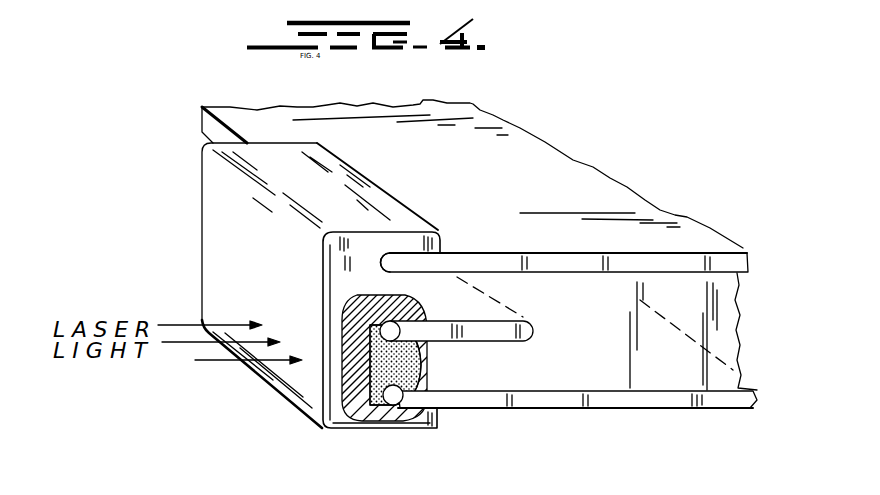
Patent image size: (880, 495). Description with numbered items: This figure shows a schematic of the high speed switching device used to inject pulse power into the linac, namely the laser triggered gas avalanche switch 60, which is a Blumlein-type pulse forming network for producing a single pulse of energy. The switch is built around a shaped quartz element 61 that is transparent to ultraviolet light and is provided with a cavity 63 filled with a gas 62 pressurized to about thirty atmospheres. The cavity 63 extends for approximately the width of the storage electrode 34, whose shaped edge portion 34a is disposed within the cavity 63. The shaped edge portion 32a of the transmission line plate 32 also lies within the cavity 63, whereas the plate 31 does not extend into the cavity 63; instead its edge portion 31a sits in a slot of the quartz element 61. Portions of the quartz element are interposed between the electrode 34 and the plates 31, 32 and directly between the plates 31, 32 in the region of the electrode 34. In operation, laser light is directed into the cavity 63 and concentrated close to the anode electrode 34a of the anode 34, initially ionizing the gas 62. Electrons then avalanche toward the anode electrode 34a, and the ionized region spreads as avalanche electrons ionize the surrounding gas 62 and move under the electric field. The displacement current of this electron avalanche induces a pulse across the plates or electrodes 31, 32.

The switch 60 is at (182, 238).
The shaped quartz element 61 is at (270, 387).
The gas 62 is at (317, 418).
The cavity 63 is at (410, 362).
The plate 31 is at (663, 260).
The edge portion of plate 31a is at (393, 262).
The transmission line plate 32 is at (650, 397).
The shaped edge portion of transmission line plate 32a is at (393, 402).
The storage electrode 34 is at (533, 331).
The shaped edge portion of storage electrode 34a is at (372, 316).